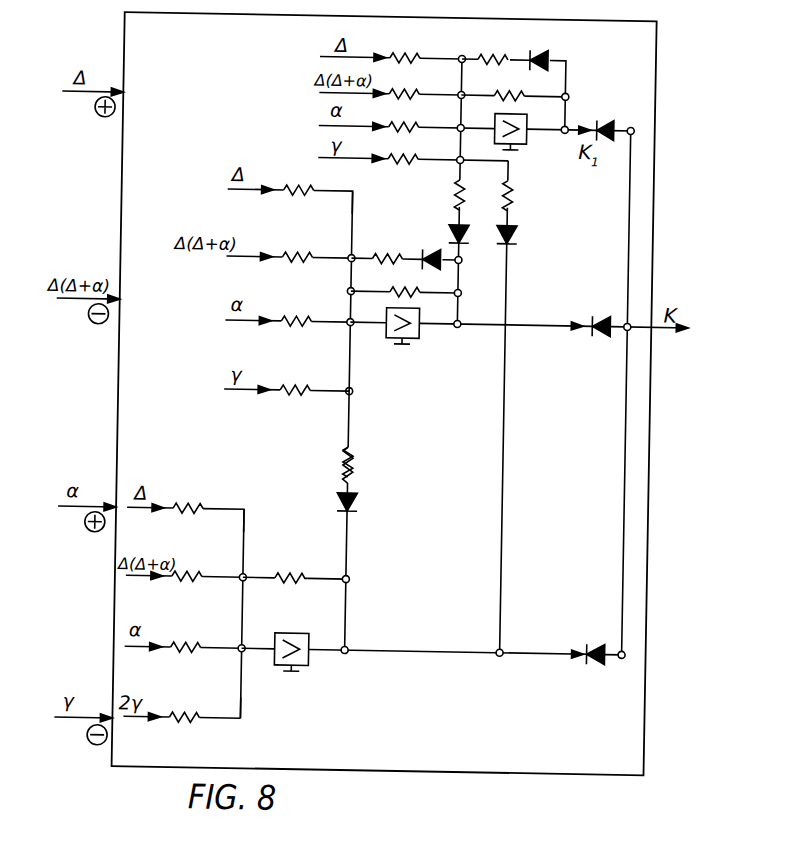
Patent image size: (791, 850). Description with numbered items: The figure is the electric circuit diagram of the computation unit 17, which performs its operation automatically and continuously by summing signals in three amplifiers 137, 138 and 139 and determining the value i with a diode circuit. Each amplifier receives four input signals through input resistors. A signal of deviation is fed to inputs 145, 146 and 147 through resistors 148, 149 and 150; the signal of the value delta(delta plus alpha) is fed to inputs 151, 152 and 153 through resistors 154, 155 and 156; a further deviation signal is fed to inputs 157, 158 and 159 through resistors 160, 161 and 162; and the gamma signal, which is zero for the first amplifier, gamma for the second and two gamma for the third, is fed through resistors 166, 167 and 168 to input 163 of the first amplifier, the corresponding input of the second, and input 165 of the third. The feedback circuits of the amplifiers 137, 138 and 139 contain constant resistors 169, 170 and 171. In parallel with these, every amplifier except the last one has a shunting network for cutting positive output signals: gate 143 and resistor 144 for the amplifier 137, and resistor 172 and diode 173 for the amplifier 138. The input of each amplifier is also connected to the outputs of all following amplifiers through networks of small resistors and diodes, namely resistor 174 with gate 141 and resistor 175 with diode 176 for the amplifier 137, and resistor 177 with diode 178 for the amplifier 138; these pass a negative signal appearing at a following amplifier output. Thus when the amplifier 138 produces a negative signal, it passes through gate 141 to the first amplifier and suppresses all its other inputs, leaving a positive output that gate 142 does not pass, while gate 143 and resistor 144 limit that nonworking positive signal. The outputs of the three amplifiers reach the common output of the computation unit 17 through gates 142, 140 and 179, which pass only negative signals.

The computation unit 17 is at (130, 63).
The amplifier 137 is at (523, 138).
The amplifier 138 is at (418, 336).
The amplifier 139 is at (313, 665).
The gate 140 is at (594, 316).
The gate 141 is at (456, 260).
The gate 142 is at (607, 118).
The gate 143 is at (556, 52).
The resistor 144 is at (493, 49).
The input 145 is at (457, 48).
The input 146 is at (364, 189).
The input 147 is at (245, 508).
The resistor 148 is at (404, 48).
The resistor 149 is at (299, 178).
The resistor 150 is at (188, 497).
The input 151 is at (446, 83).
The input 152 is at (337, 247).
The input 153 is at (252, 566).
The resistor 154 is at (368, 231).
The resistor 155 is at (297, 246).
The resistor 156 is at (187, 566).
The input 157 is at (472, 118).
The input 158 is at (335, 311).
The input 159 is at (252, 638).
The resistor 160 is at (405, 117).
The resistor 161 is at (292, 312).
The resistor 162 is at (185, 636).
The input 163 is at (472, 149).
The input 165 is at (253, 719).
The resistor 166 is at (403, 149).
The resistor 167 is at (294, 379).
The resistor 168 is at (184, 706).
The constant resistor 169 is at (509, 85).
The constant resistor 170 is at (405, 281).
The constant resistor 171 is at (293, 566).
The resistor 172 is at (387, 246).
The diode 173 is at (443, 228).
The resistor 174 is at (446, 194).
The resistor 175 is at (493, 195).
The diode 176 is at (522, 236).
The resistor 177 is at (362, 465).
The diode 178 is at (360, 500).
The gate 179 is at (585, 642).